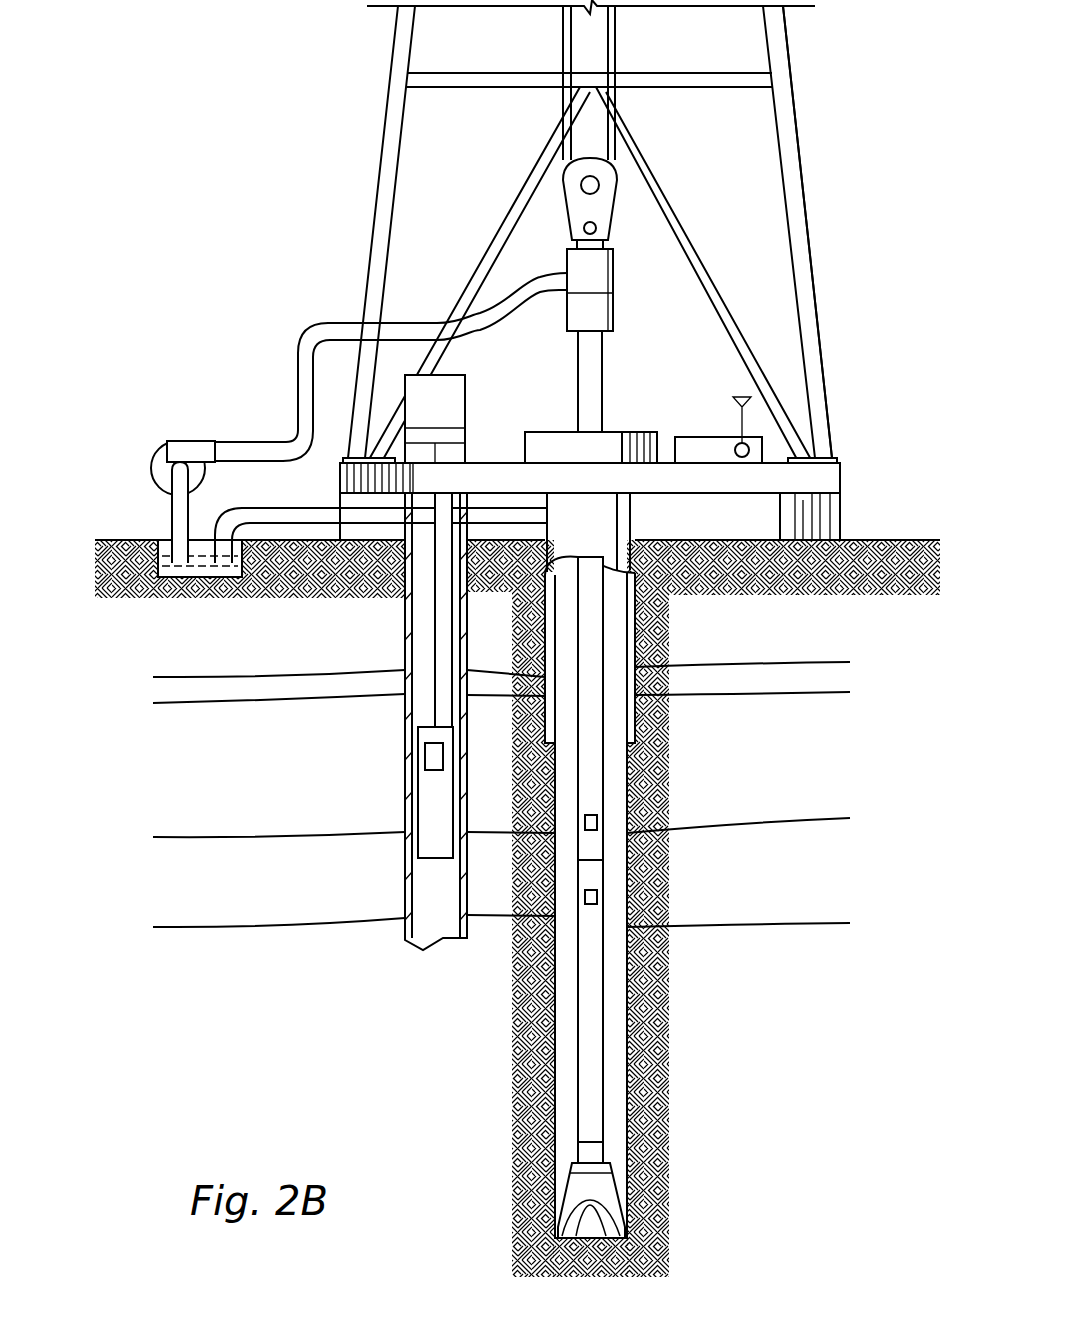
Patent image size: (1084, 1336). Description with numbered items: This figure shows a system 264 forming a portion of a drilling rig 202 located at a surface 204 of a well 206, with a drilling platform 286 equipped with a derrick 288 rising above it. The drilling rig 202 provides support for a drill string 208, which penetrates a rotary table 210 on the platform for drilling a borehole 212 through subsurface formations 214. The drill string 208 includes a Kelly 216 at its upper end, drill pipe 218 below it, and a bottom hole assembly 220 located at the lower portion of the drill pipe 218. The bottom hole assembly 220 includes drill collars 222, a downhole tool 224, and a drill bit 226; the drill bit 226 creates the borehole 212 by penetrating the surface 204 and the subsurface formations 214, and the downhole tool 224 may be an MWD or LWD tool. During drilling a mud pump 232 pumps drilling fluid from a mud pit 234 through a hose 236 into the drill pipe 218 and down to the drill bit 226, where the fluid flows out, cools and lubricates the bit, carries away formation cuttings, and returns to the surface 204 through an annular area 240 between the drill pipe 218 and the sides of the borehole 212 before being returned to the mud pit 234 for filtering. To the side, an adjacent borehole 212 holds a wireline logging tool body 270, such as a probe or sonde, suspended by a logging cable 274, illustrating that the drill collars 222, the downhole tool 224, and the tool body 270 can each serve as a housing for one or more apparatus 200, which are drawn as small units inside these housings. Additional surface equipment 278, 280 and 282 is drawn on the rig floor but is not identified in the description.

The apparatus 200 is at (425, 745).
The drilling rig 202 is at (815, 234).
The surface 204 is at (863, 538).
The well 206 is at (655, 522).
The drill string 208 is at (618, 662).
The rotary table 210 is at (540, 434).
The borehole 212 is at (407, 648).
The subsurface formations 214 is at (153, 950).
The Kelly 216 is at (603, 343).
The drill pipe 218 is at (600, 763).
The bottom hole assembly 220 is at (503, 740).
The drill collars 222 is at (640, 727).
The downhole tool 224 is at (597, 873).
The drill bit 226 is at (602, 1193).
The mud pump 232 is at (178, 440).
The mud pit 234 is at (203, 590).
The hose 236 is at (298, 390).
The annular area 240 is at (617, 789).
The system 264 is at (272, 139).
The tool body 270 is at (418, 802).
The logging cable 274 is at (435, 612).
The surface control unit 278 is at (680, 437).
The drawworks / equipment box 280 is at (452, 375).
The transmitter antenna 282 is at (735, 447).
The drilling platform 286 is at (842, 472).
The derrick 288 is at (799, 144).